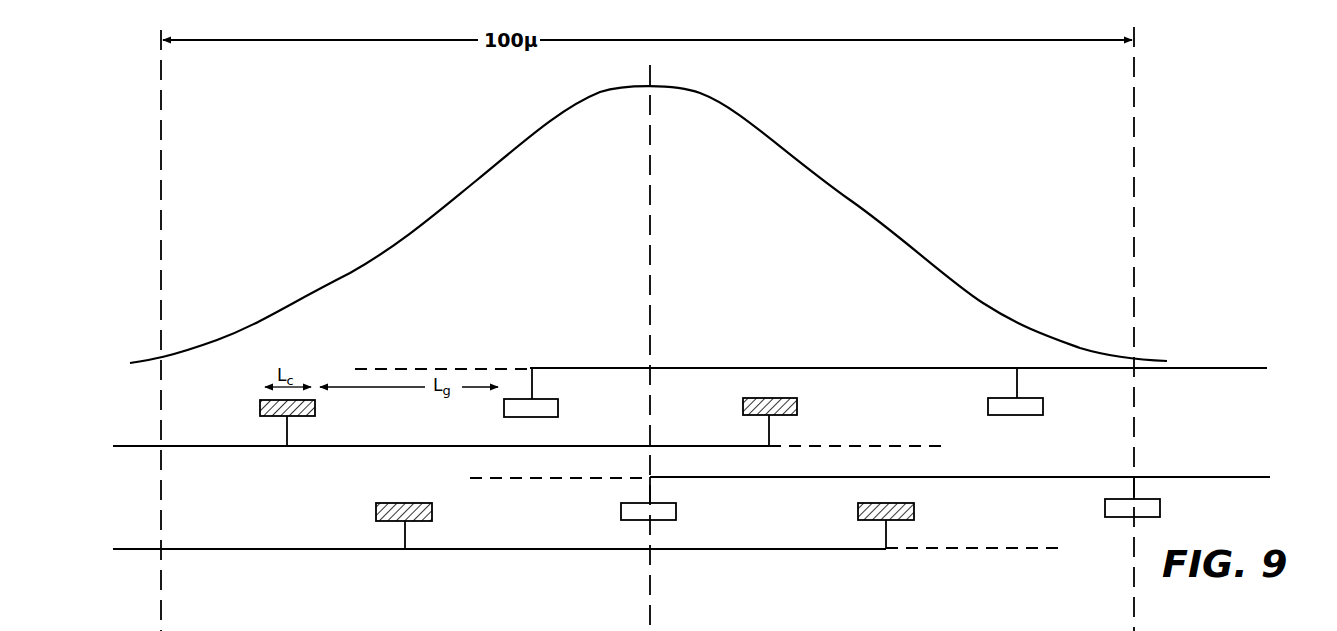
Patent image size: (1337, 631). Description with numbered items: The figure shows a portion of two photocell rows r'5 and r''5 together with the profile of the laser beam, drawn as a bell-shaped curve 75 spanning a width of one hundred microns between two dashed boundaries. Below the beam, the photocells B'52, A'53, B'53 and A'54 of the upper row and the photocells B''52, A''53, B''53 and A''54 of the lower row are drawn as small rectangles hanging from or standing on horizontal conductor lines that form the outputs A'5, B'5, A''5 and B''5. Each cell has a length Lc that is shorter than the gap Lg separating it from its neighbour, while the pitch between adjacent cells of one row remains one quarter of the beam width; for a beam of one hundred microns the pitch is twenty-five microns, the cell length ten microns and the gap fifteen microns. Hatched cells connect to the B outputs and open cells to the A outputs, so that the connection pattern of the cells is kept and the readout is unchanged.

The optical beam intensity profile curve 75 is at (783, 140).
The rows r'5 and r''5 with outputs A'5, B'5, A''5, B'' 5 is at (660, 459).
The photocells B'52 and B'' 52 is at (315, 404).
The photocells A'53, B'53, A''53 and B'' 53 is at (558, 406).
The photocells A'54 and A'' 54 is at (1020, 415).